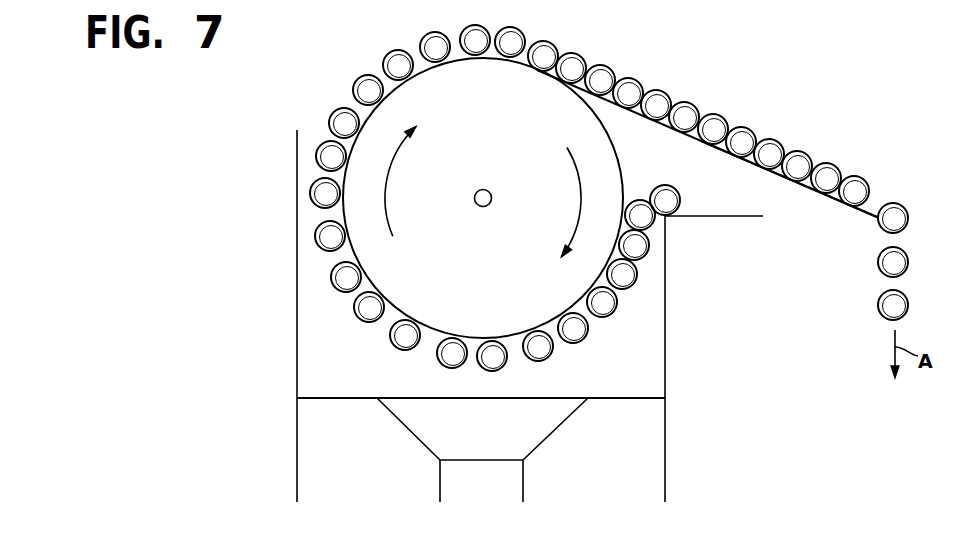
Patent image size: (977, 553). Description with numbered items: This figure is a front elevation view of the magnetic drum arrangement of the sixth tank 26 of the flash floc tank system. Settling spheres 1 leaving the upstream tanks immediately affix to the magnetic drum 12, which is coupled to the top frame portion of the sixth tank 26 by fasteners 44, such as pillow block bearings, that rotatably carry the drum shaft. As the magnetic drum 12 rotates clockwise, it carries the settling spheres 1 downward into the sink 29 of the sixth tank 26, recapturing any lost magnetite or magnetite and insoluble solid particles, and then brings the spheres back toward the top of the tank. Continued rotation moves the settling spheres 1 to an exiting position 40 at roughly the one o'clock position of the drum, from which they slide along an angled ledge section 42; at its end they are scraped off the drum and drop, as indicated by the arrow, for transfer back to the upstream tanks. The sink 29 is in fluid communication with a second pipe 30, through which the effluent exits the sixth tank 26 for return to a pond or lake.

The settling spheres 1 is at (597, 67).
The magnetic drum 12 is at (496, 152).
The sixth tank 26 is at (277, 165).
The sink 29 is at (332, 300).
The second pipe 30 is at (527, 410).
The exiting position 40 is at (608, 67).
The angled ledge section 42 is at (833, 197).
The fasteners 44 is at (485, 207).